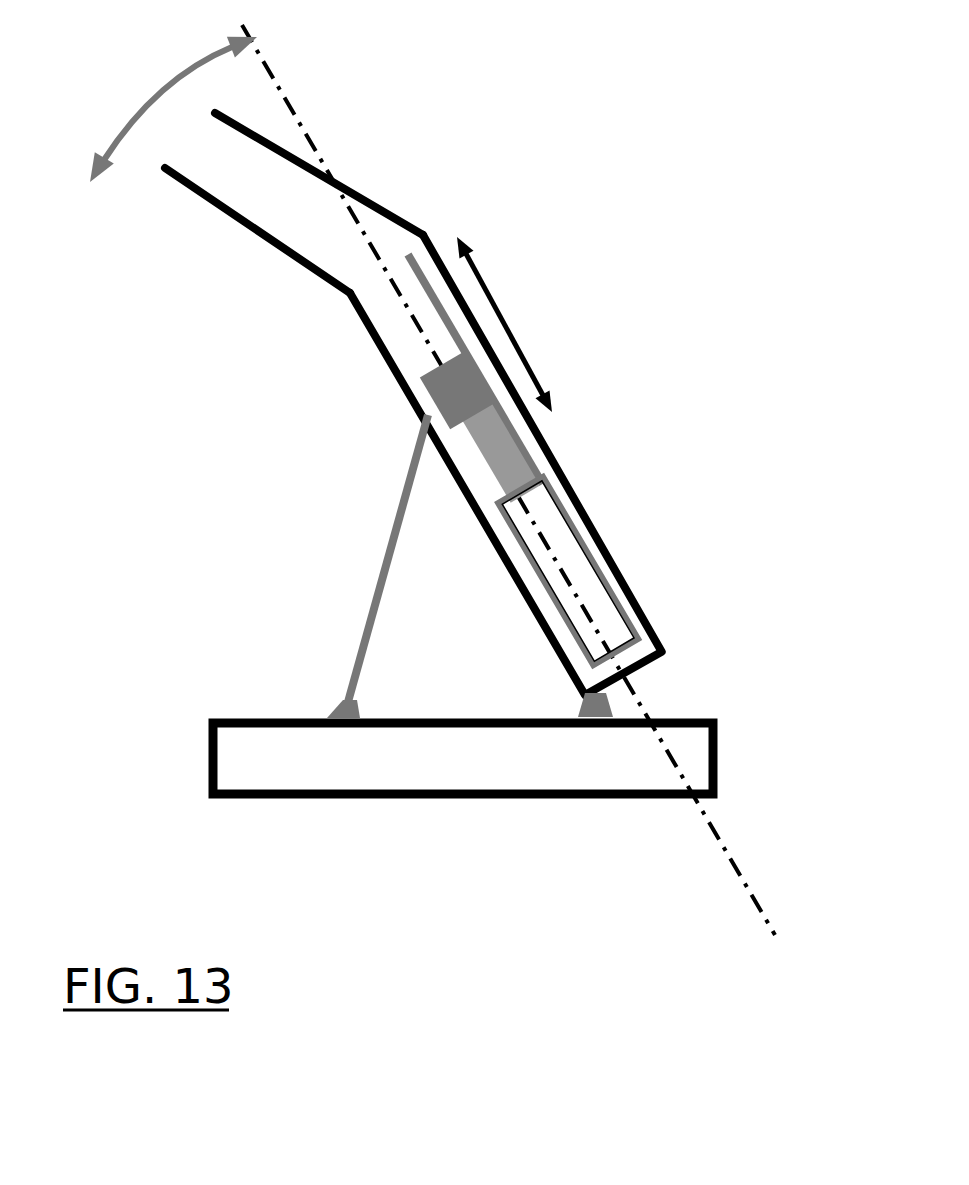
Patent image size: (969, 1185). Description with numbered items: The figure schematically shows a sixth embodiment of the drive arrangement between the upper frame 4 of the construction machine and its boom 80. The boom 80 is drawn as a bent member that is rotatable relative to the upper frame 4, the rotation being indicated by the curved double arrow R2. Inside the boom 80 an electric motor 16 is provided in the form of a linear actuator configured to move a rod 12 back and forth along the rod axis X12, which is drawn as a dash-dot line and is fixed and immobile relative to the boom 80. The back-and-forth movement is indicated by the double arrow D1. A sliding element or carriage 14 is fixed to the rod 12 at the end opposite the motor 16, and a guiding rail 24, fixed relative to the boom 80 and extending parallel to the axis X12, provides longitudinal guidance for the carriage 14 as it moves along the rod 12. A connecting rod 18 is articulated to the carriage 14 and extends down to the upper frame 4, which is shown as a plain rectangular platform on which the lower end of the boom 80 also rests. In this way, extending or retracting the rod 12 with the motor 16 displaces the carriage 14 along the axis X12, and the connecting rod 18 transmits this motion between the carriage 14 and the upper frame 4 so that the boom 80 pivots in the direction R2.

The upper frame 4 is at (463, 758).
The rod 12 is at (543, 438).
The carriage 14 is at (442, 360).
The electric motor 16 is at (565, 565).
The connecting rod 18 is at (385, 543).
The guiding rail 24 is at (410, 253).
The boom 80 is at (294, 203).
The rotation direction R2 is at (169, 109).
The sliding direction D1 is at (524, 324).
The rod axis X12 is at (508, 507).